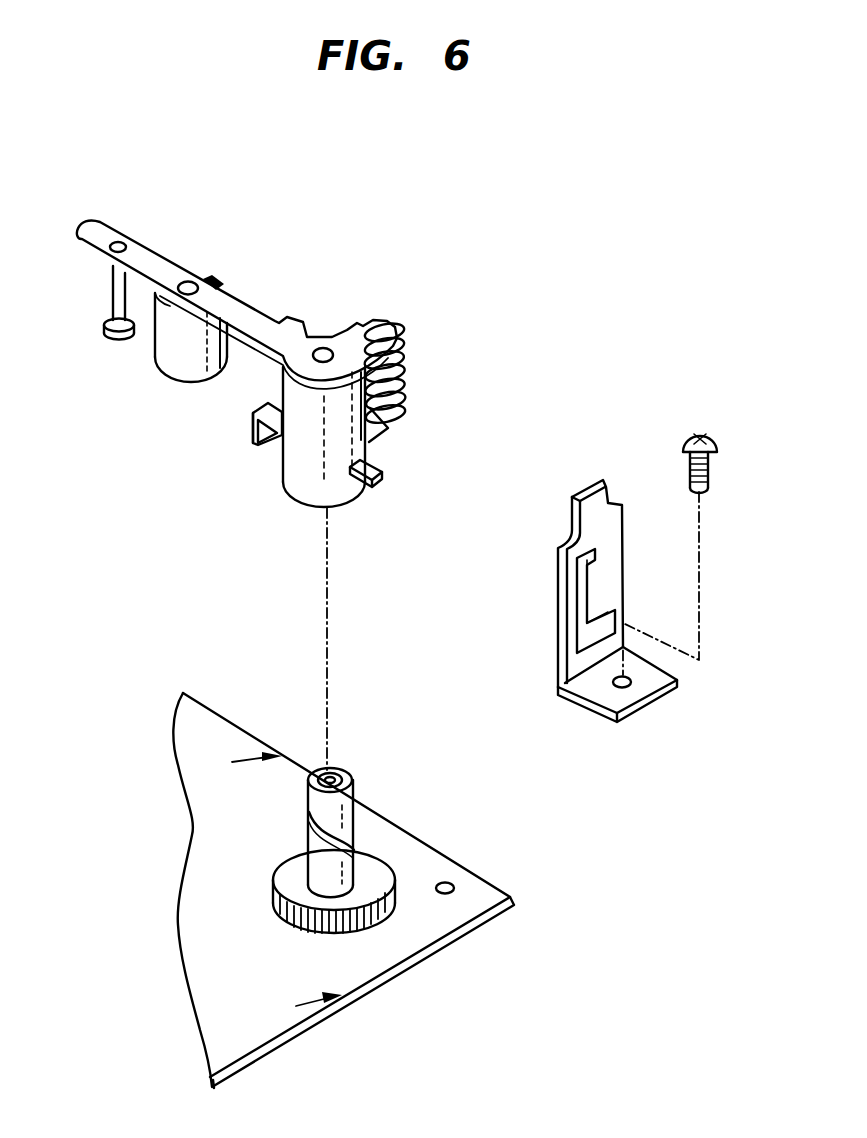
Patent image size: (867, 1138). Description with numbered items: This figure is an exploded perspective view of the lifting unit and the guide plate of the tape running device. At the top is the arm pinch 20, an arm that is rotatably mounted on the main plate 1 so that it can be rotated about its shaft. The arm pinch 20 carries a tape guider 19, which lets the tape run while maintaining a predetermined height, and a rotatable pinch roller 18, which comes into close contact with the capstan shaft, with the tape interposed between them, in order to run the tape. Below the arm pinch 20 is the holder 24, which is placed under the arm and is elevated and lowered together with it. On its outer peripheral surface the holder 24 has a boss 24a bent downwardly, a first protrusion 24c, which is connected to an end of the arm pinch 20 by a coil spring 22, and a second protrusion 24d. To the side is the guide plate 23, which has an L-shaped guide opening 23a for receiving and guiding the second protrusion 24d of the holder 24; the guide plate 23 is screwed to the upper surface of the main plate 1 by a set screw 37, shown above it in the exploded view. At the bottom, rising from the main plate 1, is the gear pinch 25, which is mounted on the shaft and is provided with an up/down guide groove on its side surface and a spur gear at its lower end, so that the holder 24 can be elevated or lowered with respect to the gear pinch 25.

The main plate 1 is at (353, 977).
The pinch roller 18 is at (182, 370).
The tape guider 19 is at (112, 342).
The arm pinch 20 is at (262, 320).
The coil spring 22 is at (408, 370).
The guide plate 23 is at (597, 490).
The L-shaped guide opening 23a is at (582, 602).
The holder 24 is at (305, 488).
The boss 24a is at (253, 428).
The first protrusion 24c is at (386, 422).
The second protrusion 24d is at (378, 483).
The gear pinch 25 is at (357, 823).
The set screw 37 is at (700, 433).